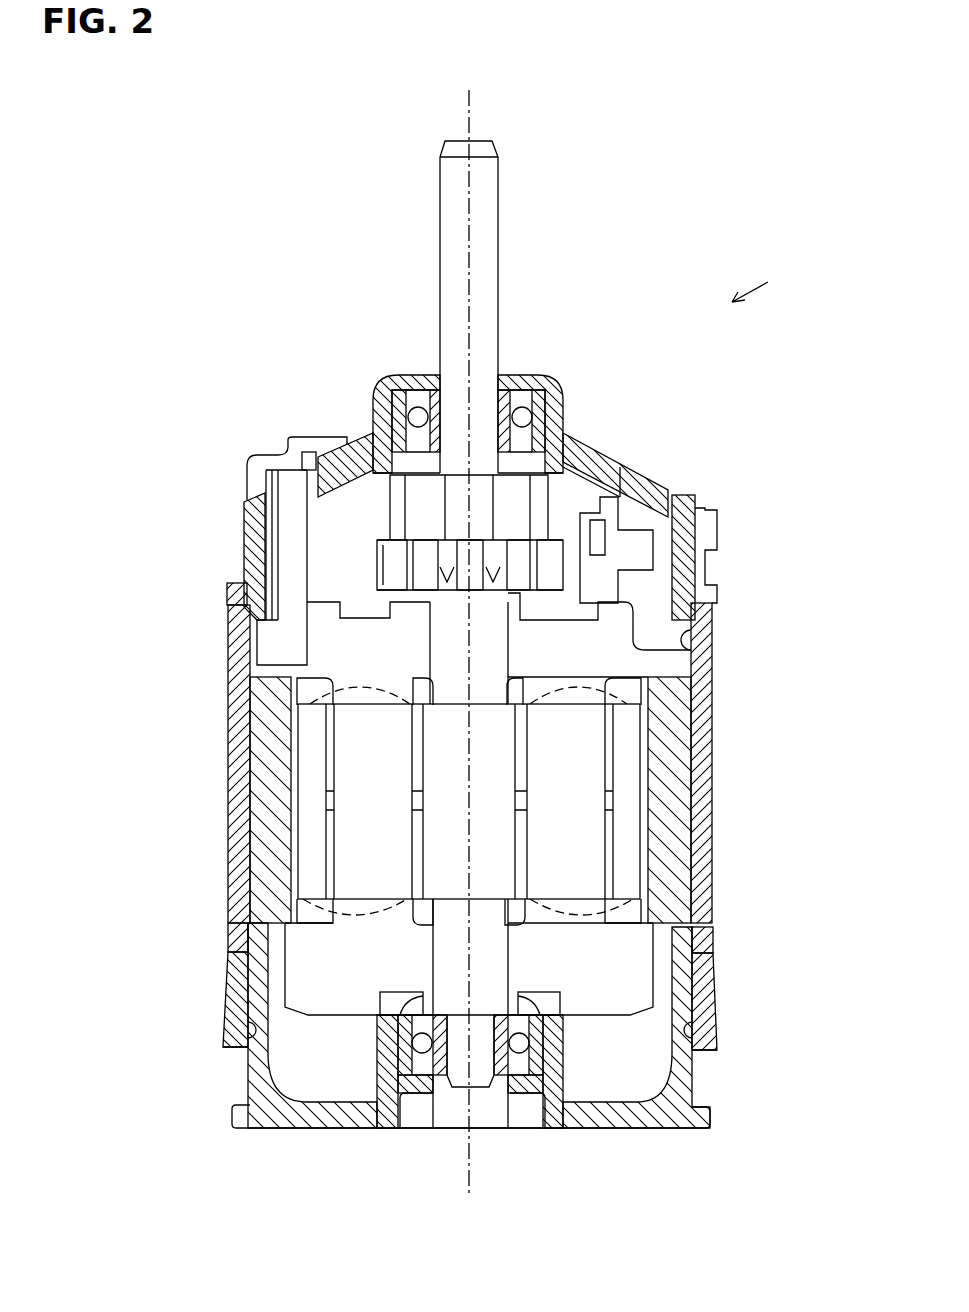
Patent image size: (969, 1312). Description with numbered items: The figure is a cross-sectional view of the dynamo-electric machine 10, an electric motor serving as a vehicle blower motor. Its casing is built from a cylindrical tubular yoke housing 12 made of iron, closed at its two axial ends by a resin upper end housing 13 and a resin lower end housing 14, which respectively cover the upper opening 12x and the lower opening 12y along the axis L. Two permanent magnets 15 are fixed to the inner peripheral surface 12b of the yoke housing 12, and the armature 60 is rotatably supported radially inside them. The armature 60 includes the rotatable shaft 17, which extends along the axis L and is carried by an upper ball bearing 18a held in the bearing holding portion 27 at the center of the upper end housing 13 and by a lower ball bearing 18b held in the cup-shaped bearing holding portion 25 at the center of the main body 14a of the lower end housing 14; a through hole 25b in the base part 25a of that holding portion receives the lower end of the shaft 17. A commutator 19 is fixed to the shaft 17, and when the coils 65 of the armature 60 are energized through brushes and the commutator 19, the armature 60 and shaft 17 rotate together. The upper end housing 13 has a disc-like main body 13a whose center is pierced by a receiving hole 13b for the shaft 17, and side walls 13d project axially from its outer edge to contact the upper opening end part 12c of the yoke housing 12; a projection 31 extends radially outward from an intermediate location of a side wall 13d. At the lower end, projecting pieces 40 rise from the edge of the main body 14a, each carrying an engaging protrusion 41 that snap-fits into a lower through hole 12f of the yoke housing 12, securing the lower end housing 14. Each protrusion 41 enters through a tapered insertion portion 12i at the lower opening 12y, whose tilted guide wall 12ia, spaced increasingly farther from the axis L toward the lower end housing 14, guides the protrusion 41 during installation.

The dynamo-electric machine 10 is at (772, 270).
The axis L is at (478, 104).
The rotatable shaft 17 is at (498, 284).
The upper ball bearing 18a is at (383, 392).
The bearing holding portion 27 is at (538, 406).
The main body 13a is at (360, 432).
The receiving hole 13b is at (512, 372).
The upper end housing 13 is at (250, 496).
The side wall 13d is at (250, 550).
The projection 31 is at (226, 592).
The commutator 19 is at (395, 517).
The upper opening end part 12c is at (698, 600).
The yoke housing 12 is at (226, 620).
The inner peripheral surface 12b is at (238, 720).
The upper opening 12x is at (692, 645).
The permanent magnet 15 is at (318, 690).
The armature 60 is at (372, 893).
The coil 65 is at (378, 690).
The projecting piece 40 is at (262, 1008).
The lower end housing 14 is at (248, 1080).
The main body 14a is at (318, 1128).
The engaging protrusion 41 is at (246, 932).
The lower through hole 12f is at (248, 940).
The insertion portion 12i is at (226, 988).
The lower opening 12y is at (250, 1030).
The guide wall 12ia is at (250, 1050).
The bearing holding portion 25 is at (533, 1007).
The base part 25a is at (418, 1093).
The through hole 25b is at (510, 1093).
The lower ball bearing 18b is at (537, 1060).